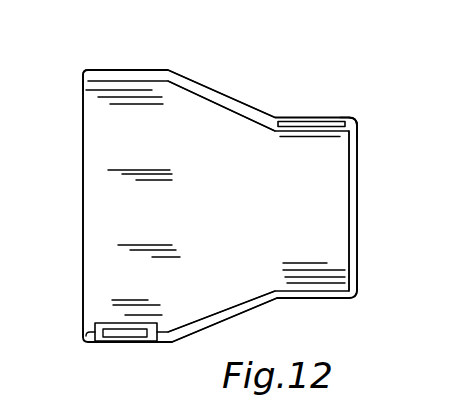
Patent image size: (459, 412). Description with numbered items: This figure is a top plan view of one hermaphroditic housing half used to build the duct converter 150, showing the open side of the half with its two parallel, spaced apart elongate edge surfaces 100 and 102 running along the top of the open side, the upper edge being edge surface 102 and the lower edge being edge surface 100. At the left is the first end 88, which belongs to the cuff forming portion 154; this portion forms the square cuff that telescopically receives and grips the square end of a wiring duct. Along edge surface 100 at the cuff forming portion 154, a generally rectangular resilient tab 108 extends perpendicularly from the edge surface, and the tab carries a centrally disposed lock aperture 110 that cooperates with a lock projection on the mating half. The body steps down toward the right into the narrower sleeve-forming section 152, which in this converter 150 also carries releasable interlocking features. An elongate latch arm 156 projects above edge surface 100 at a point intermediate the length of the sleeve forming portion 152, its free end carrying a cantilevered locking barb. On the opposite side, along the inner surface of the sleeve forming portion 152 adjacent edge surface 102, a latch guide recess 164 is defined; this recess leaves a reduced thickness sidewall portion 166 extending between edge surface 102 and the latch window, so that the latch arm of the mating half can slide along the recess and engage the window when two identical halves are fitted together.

The hermaphroditic duct converter 150 is at (272, 68).
The sleeve-forming section 152 is at (333, 105).
The cuff forming portion 154 is at (163, 37).
The elongate edge surface 102 is at (194, 87).
The elongate edge surface 100 is at (213, 317).
The reduced thickness sidewall portion 166 is at (293, 119).
The latch guide recess 164 is at (344, 113).
The latch arm 156 is at (328, 298).
The first end 88 is at (83, 310).
The resilient tab 108 is at (152, 333).
The lock aperture 110 is at (130, 333).